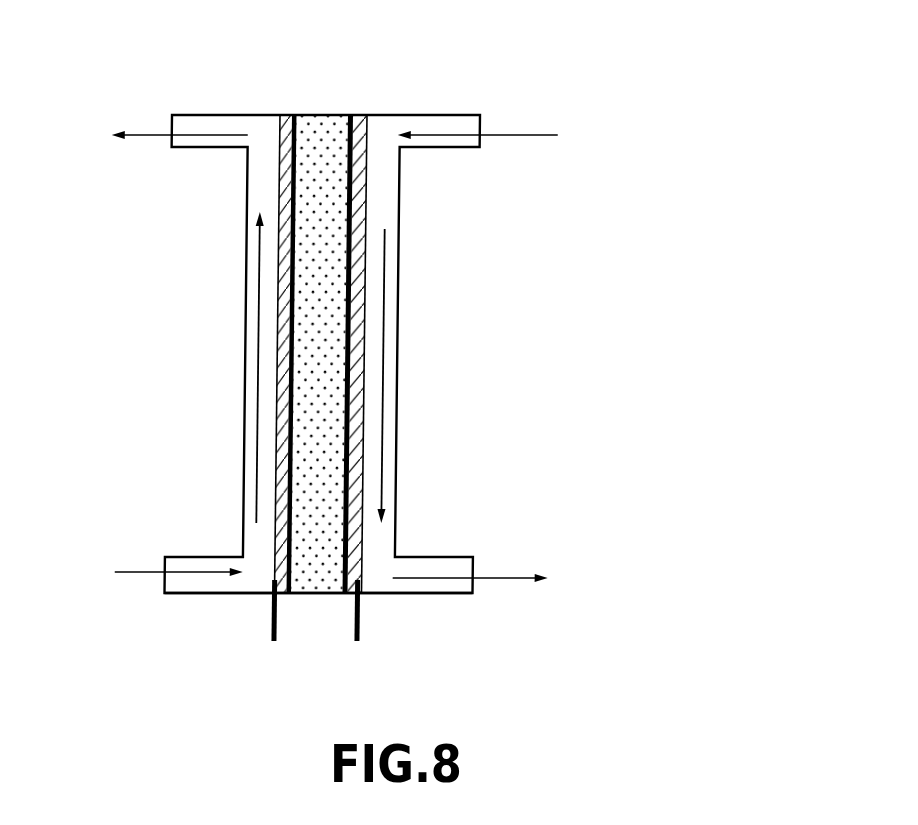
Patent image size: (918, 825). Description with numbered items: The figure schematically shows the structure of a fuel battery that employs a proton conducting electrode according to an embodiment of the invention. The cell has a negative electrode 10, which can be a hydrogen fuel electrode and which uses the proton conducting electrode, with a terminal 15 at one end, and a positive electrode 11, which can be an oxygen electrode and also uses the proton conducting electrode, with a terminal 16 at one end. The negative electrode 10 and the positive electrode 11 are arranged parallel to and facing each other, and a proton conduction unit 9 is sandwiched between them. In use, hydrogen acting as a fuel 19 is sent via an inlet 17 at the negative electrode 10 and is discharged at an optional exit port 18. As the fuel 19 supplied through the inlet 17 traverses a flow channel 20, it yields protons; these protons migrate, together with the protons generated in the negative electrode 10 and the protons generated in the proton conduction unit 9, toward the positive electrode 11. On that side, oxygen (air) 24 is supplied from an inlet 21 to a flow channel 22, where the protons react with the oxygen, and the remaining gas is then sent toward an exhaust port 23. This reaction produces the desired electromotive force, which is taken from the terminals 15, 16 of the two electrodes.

The proton conduction unit 9 is at (335, 128).
The negative electrode 10 is at (284, 303).
The positive electrode 11 is at (359, 173).
The terminal 15 is at (283, 639).
The terminal 16 is at (366, 639).
The inlet 17 is at (199, 587).
The exit port 18 is at (195, 128).
The fuel 19 is at (141, 570).
The flow channel 20 is at (270, 400).
The inlet 21 is at (447, 130).
The flow channel 22 is at (372, 383).
The exhaust port 23 is at (447, 573).
The oxygen (air) 24 is at (531, 137).